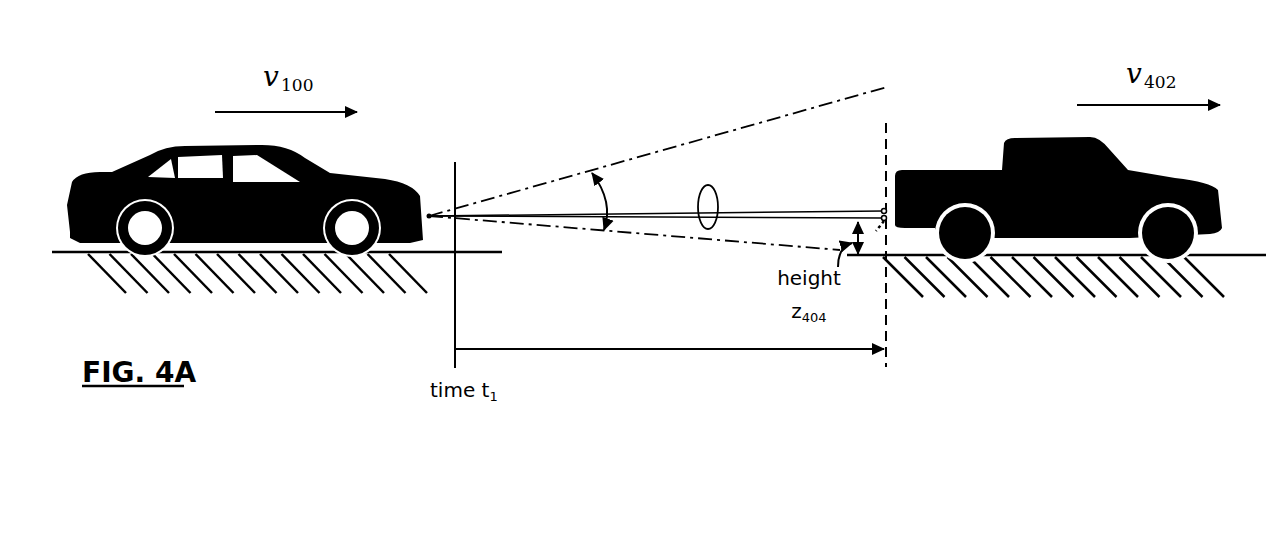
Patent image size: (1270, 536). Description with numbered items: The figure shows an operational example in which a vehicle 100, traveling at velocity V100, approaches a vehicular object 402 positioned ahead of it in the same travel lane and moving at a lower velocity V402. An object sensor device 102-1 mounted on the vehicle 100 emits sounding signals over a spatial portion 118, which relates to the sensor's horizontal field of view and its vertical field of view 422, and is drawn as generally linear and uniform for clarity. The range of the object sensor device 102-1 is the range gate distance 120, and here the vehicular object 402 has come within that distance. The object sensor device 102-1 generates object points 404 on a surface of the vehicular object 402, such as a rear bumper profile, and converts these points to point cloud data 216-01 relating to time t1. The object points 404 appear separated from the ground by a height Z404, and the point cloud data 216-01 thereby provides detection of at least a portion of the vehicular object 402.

The vehicle 100 is at (96, 162).
The object sensor device 102-1 is at (434, 212).
The spatial portion 118 is at (711, 152).
The point cloud data 216-01 is at (692, 234).
The vertical field of view 422 is at (608, 212).
The object points 404 is at (877, 203).
The range gate distance 120 is at (669, 381).
The vehicular object 402 is at (977, 155).